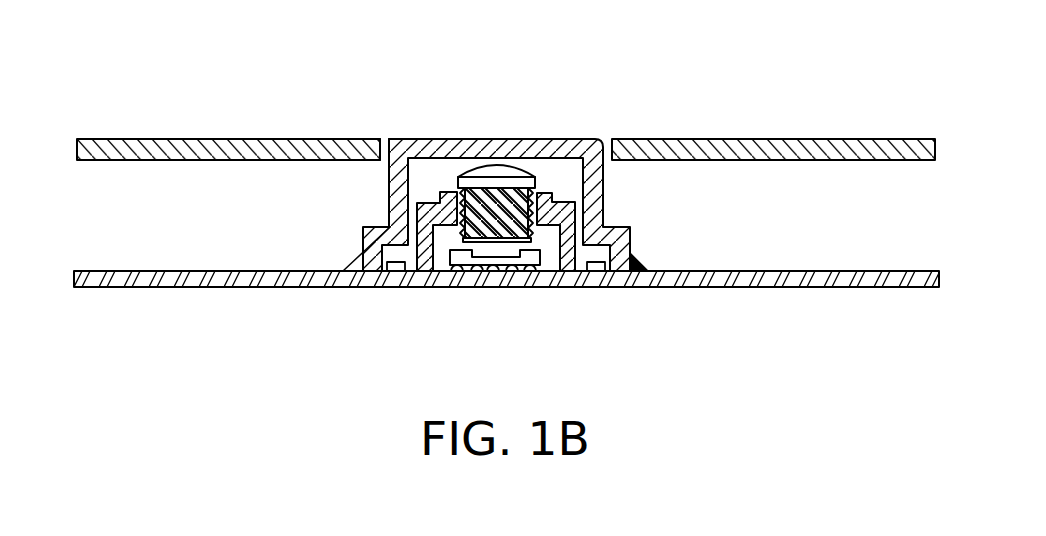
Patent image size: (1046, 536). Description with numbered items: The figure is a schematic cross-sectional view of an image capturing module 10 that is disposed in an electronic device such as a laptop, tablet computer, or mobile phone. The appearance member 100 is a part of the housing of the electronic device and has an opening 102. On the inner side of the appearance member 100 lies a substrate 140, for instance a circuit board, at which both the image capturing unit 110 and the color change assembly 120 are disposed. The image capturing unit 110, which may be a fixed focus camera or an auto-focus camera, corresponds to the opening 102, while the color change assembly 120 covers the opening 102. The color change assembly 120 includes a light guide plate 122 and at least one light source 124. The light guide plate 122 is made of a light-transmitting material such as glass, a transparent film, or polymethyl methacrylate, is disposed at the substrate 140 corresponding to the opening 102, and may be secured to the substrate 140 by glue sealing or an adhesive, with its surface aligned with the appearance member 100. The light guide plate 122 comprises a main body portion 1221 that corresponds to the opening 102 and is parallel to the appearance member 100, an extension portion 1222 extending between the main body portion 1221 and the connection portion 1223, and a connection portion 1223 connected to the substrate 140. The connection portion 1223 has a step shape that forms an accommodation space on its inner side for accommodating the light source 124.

The image capturing module 10 is at (142, 80).
The appearance member 100 is at (717, 139).
The opening 102 is at (385, 139).
The image capturing unit 110 is at (495, 228).
The color change assembly 120 is at (538, 212).
The light guide plate 122 is at (484, 128).
The main body portion 1221 is at (573, 158).
The extension portion 1222 is at (596, 200).
The connection portion 1223 is at (623, 237).
The light source 124 is at (393, 276).
The substrate 140 is at (268, 278).